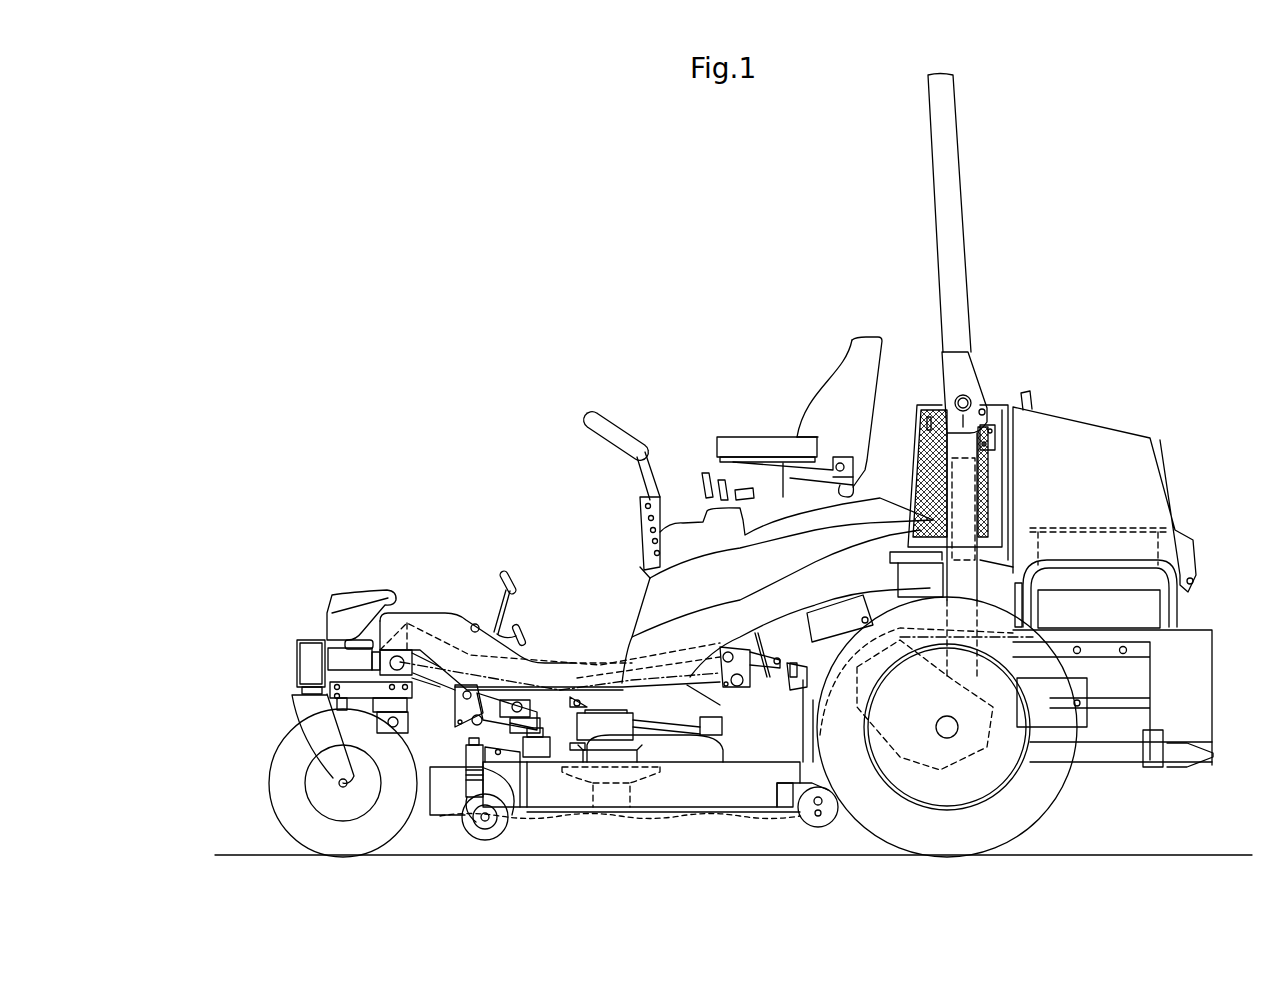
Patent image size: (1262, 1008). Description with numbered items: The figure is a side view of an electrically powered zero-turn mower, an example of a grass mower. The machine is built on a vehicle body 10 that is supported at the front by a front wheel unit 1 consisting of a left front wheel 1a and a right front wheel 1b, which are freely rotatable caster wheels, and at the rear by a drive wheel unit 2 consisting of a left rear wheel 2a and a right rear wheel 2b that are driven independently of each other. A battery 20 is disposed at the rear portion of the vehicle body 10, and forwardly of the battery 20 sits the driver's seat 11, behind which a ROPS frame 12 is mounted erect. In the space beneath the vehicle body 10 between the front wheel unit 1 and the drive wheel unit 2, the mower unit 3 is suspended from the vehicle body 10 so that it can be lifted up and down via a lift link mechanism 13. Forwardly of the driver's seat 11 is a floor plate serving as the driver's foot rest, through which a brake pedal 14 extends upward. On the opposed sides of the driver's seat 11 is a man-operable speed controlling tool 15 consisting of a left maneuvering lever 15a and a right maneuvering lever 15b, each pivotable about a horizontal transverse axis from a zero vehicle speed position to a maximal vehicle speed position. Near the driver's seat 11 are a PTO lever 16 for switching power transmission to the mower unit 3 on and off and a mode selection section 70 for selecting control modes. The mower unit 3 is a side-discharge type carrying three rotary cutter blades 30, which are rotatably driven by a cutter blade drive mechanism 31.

The front wheel unit 1 is at (293, 748).
The left front wheel 1a is at (293, 748).
The right front wheel 1b is at (272, 788).
The drive wheel unit 2 is at (998, 727).
The left rear wheel 2a is at (998, 727).
The right rear wheel 2b is at (1050, 783).
The mower unit 3 is at (634, 742).
The vehicle body 10 is at (436, 614).
The driver's seat 11 is at (799, 417).
The ROPS frame 12 is at (937, 186).
The lift link mechanism 13 is at (450, 727).
The brake pedal 14 is at (512, 573).
The man-operable speed controlling tool 15 is at (565, 495).
The left maneuvering lever 15a is at (565, 495).
The right maneuvering lever 15b is at (600, 443).
The PTO lever 16 is at (703, 478).
The battery 20 is at (1158, 608).
The rotary cutter blades 30 is at (587, 815).
The cutter blade drive mechanism 31 is at (606, 707).
The mode selection section 70 is at (745, 457).